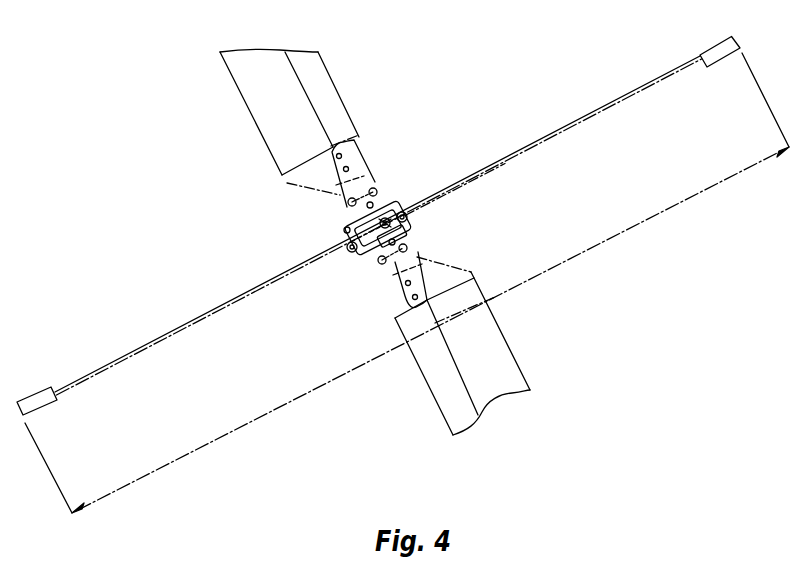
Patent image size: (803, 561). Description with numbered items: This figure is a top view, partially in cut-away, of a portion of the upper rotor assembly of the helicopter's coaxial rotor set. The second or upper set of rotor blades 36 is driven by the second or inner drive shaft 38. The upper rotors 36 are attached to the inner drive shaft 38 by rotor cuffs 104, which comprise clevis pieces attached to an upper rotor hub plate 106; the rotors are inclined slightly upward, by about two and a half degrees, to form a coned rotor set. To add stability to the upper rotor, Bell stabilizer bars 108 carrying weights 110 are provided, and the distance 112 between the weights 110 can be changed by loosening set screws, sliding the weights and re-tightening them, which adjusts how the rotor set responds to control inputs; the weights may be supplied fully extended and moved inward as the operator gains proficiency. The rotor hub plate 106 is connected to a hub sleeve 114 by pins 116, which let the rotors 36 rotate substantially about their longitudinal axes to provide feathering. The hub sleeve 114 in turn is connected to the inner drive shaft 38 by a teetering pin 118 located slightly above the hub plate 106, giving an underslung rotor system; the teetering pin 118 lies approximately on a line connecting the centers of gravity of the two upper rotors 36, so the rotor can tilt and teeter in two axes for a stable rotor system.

The second set of rotor blades 36 is at (332, 73).
The second drive shaft 38 is at (372, 229).
The rotor cuff 104 is at (372, 181).
The upper rotor hub plate 106 is at (413, 235).
The Bell stabilizer bar 108 is at (548, 136).
The weight 110 is at (710, 53).
The distance between the weights 112 is at (635, 223).
The hub sleeve 114 is at (383, 208).
The pin 116 is at (362, 218).
The teetering pin 118 is at (413, 220).